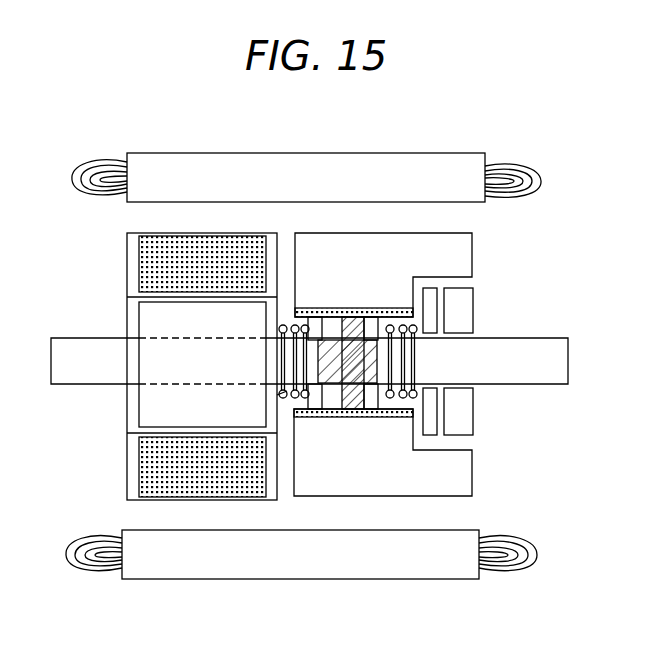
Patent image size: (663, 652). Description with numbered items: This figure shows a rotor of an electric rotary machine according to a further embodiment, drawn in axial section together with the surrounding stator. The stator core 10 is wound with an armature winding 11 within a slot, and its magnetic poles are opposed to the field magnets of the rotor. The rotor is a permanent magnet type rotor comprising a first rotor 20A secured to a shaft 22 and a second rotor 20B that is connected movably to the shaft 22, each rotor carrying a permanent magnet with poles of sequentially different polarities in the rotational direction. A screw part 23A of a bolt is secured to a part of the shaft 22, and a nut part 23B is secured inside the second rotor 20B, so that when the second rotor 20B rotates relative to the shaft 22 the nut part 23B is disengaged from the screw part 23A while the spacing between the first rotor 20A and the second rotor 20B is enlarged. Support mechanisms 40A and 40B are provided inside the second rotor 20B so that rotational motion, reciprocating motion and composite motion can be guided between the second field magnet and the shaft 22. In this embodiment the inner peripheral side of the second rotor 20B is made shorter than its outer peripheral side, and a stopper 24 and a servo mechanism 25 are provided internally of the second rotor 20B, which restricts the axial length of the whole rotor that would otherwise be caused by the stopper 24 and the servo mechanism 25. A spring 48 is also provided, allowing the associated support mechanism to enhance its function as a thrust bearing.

The stator core 10 is at (156, 156).
The armature winding 11 is at (82, 161).
The first rotor 20A is at (125, 257).
The second rotor 20B is at (430, 243).
The shaft 22 is at (75, 380).
The screw part of a bolt 23A is at (338, 318).
The nut part 23B is at (356, 318).
The stopper 24 is at (440, 306).
The servo mechanism 25 is at (462, 320).
The support mechanism 40A is at (313, 400).
The support mechanism 40B is at (381, 408).
The spring 48 is at (286, 394).